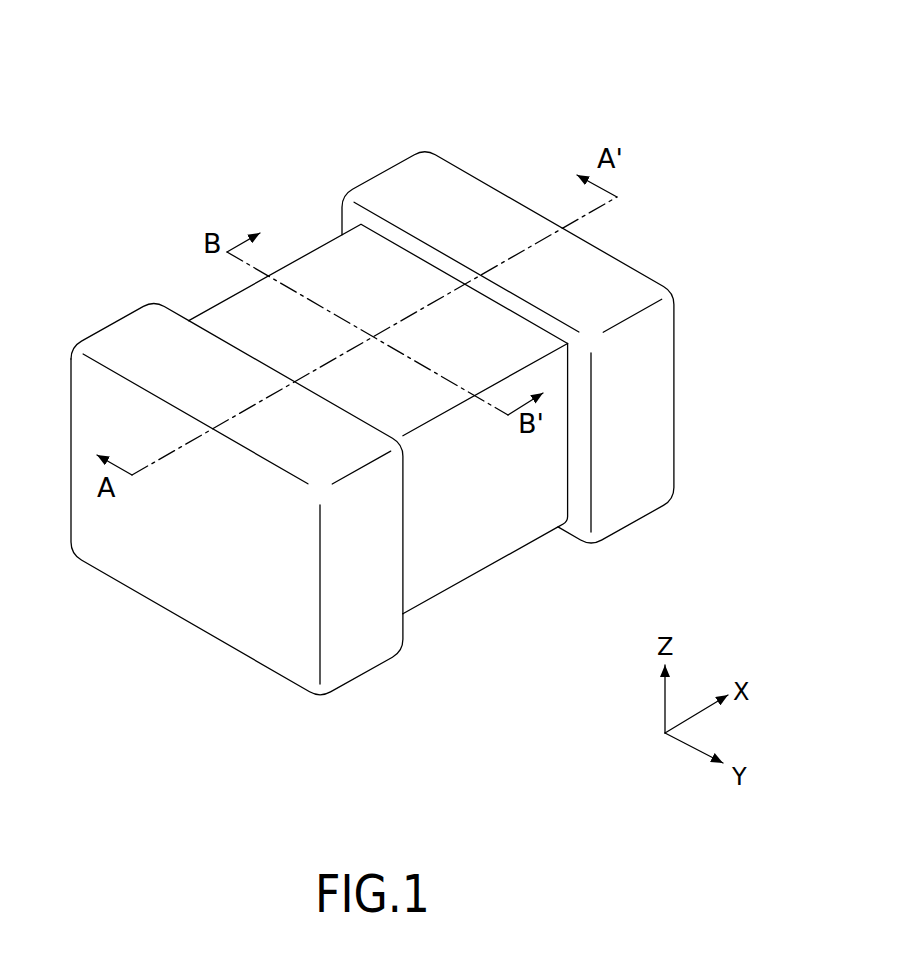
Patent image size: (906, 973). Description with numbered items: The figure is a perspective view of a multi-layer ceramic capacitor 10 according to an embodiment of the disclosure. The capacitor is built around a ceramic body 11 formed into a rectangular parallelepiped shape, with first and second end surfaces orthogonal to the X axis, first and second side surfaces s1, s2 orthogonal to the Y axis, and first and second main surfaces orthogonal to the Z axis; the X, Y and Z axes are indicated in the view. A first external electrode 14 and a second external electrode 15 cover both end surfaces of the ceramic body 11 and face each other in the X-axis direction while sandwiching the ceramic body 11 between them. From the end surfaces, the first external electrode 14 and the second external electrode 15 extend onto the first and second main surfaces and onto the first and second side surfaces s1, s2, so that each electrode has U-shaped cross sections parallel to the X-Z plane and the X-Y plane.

The multi-layer ceramic capacitor 10 is at (372, 360).
The ceramic body 11 is at (360, 384).
The first external electrode 14 is at (129, 346).
The second external electrode 15 is at (398, 190).
The first side surface s1 is at (230, 325).
The second side surface s2 is at (465, 540).